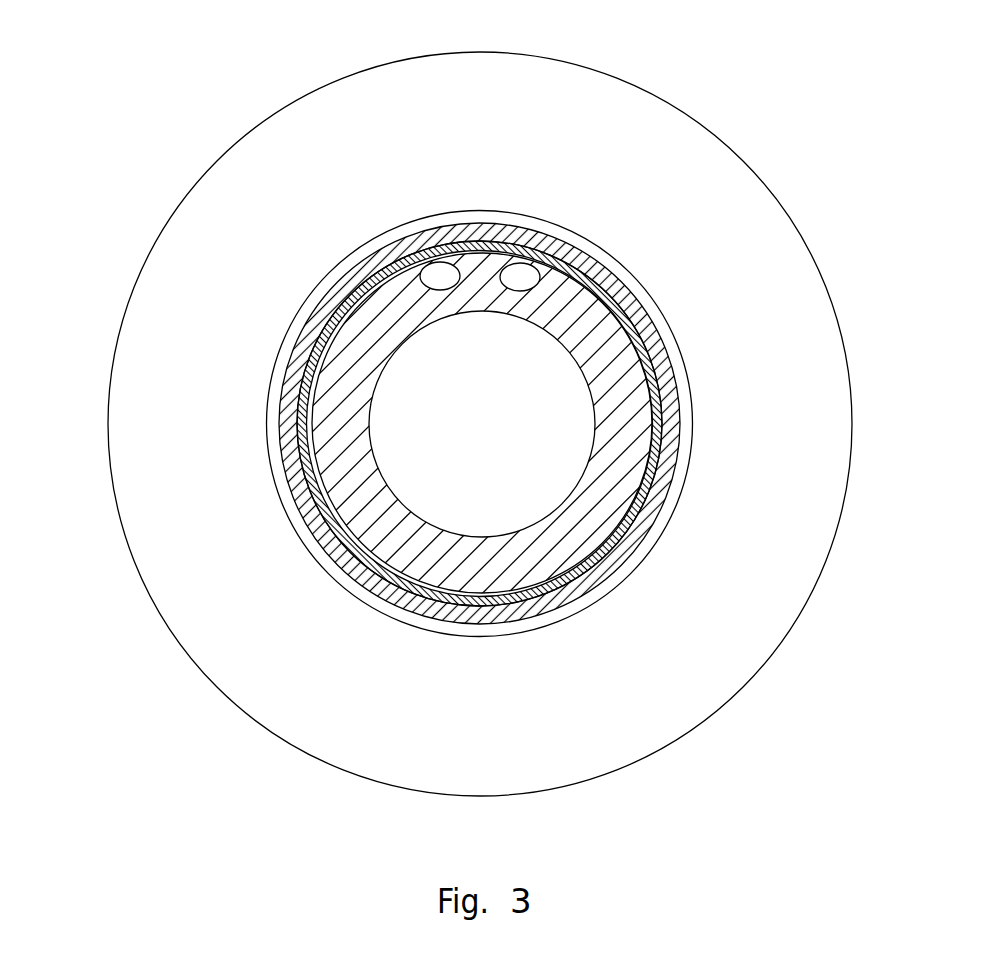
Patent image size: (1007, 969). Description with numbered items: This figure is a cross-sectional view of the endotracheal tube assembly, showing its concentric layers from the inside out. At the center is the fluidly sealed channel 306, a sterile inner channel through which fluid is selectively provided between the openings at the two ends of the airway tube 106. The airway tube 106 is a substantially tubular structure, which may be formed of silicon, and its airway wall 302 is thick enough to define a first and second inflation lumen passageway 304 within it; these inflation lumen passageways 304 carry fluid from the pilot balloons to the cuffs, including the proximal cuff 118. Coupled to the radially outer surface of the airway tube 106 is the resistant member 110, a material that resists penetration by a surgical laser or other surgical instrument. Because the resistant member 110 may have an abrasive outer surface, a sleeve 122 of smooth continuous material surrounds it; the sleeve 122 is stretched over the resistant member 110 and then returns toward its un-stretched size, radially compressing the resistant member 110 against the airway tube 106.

The proximal cuff 118 is at (673, 138).
The sleeve 122 is at (290, 440).
The resistant member 110 is at (643, 508).
The airway tube 106 is at (360, 328).
The airway wall 302 is at (638, 413).
The fluidly sealed channel 306 is at (466, 466).
The inflation lumen passageways 304 is at (516, 252).